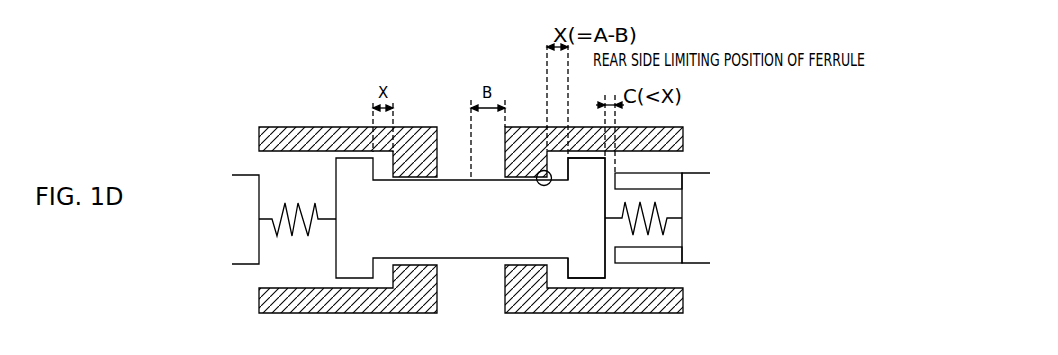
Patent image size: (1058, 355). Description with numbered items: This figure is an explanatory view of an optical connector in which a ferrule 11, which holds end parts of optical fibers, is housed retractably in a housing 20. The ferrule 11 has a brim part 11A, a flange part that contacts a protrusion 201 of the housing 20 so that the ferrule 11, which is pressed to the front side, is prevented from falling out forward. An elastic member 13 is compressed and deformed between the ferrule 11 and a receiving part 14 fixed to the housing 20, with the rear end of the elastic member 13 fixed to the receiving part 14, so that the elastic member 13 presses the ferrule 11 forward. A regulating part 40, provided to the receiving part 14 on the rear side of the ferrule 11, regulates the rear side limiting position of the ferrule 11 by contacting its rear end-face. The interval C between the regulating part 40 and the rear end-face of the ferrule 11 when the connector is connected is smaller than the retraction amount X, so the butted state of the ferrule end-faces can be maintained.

The ferrule 11 is at (471, 180).
The brim part 11A is at (585, 168).
The elastic member 13 is at (660, 210).
The receiving part 14 is at (696, 172).
The housing 20 is at (670, 130).
The regulating part 40 is at (667, 179).
The protrusion 201 is at (538, 171).